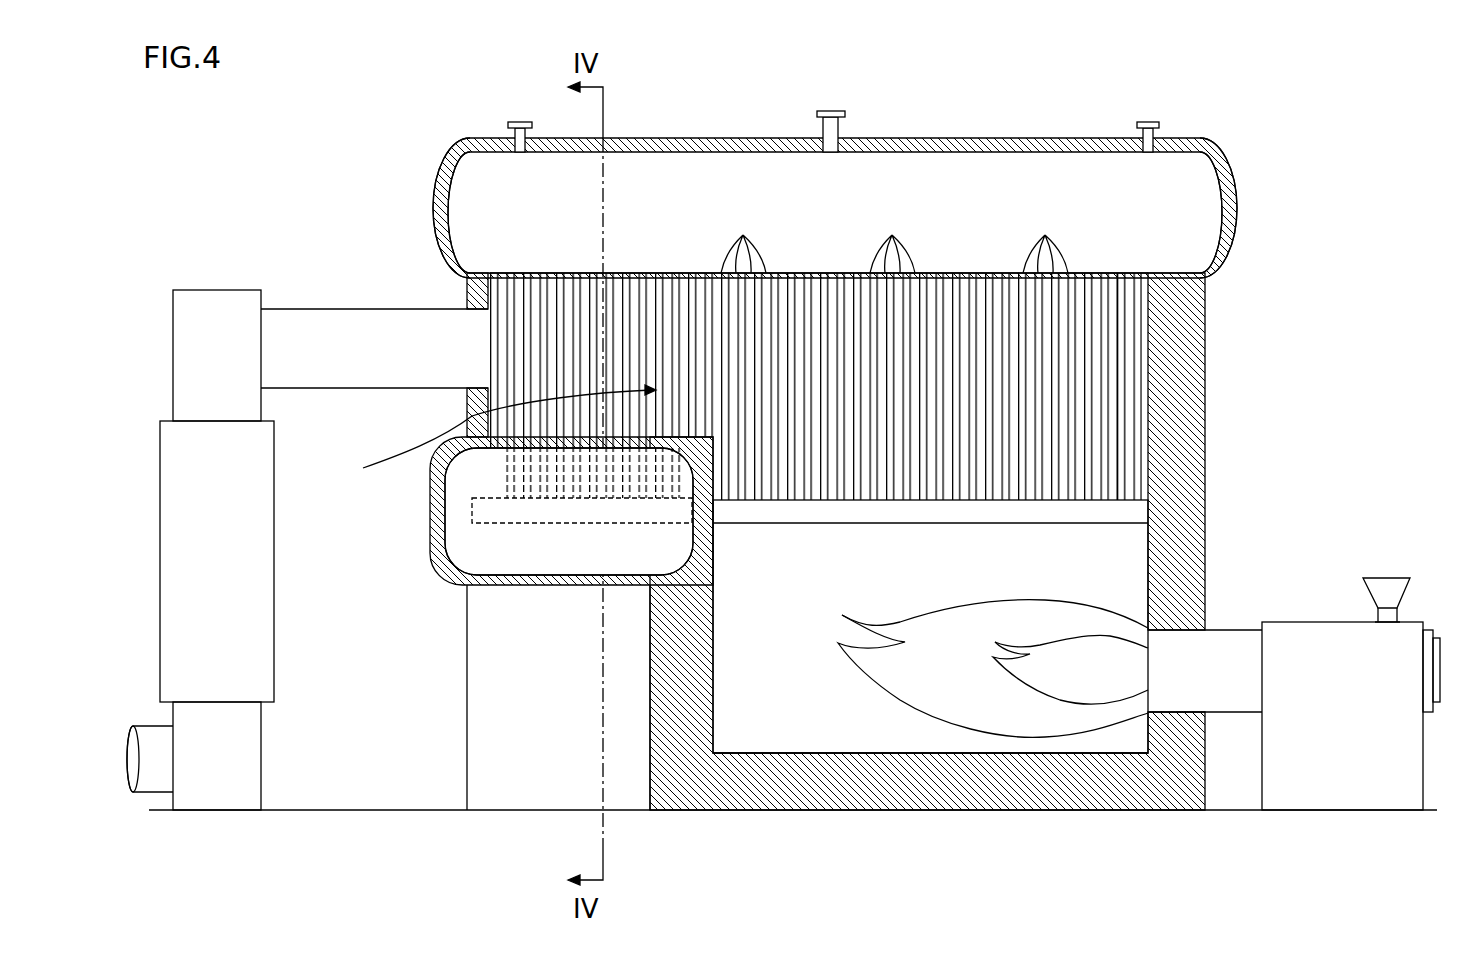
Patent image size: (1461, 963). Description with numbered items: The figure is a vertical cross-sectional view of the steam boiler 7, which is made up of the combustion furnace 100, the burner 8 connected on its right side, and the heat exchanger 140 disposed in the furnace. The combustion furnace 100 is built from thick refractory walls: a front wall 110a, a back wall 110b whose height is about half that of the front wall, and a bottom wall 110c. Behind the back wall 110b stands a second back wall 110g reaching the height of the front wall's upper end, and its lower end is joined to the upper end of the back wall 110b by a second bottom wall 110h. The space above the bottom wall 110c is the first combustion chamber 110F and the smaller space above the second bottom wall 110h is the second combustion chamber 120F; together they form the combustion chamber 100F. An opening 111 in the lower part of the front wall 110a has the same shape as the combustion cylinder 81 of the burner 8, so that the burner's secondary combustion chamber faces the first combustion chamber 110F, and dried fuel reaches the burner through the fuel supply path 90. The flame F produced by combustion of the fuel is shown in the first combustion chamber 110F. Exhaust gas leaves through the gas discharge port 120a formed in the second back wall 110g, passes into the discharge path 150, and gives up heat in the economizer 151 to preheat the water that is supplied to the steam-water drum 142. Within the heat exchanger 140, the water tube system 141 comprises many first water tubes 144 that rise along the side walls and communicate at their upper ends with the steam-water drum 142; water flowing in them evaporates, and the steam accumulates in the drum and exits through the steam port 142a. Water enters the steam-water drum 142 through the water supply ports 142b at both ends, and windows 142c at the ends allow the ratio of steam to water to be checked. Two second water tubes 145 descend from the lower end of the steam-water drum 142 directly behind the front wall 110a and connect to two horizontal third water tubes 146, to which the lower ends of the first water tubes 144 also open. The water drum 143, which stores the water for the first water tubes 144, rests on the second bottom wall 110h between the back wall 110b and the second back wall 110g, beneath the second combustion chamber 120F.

The steam boiler 7 is at (967, 82).
The burner 8 is at (1311, 616).
The combustion cylinder 81 is at (1240, 715).
The fuel supply path 90 is at (1381, 576).
The combustion furnace 100 is at (1210, 310).
The combustion chamber 100F is at (815, 580).
The front wall 110a is at (1208, 428).
The back wall 110b is at (655, 720).
The bottom wall 110c is at (1083, 802).
The first combustion chamber 110F is at (790, 712).
The second back wall 110g is at (468, 293).
The second bottom wall 110h is at (527, 588).
The opening 111 is at (1168, 708).
The gas discharge port 120a is at (478, 383).
The second combustion chamber 120F is at (478, 434).
The heat exchanger 140 is at (1063, 127).
The water tube system 141 is at (731, 324).
The steam-water drum 142 is at (726, 137).
The steam port 142a is at (829, 110).
The water supply ports 142b is at (520, 123).
The windows 142c is at (441, 196).
The water drum 143 is at (466, 545).
The first water tubes 144 is at (894, 237).
The second water tubes 145 is at (1115, 395).
The third water tubes 146 is at (1080, 523).
The discharge path 150 is at (280, 297).
The economizer 151 is at (256, 663).
The flame F is at (986, 614).